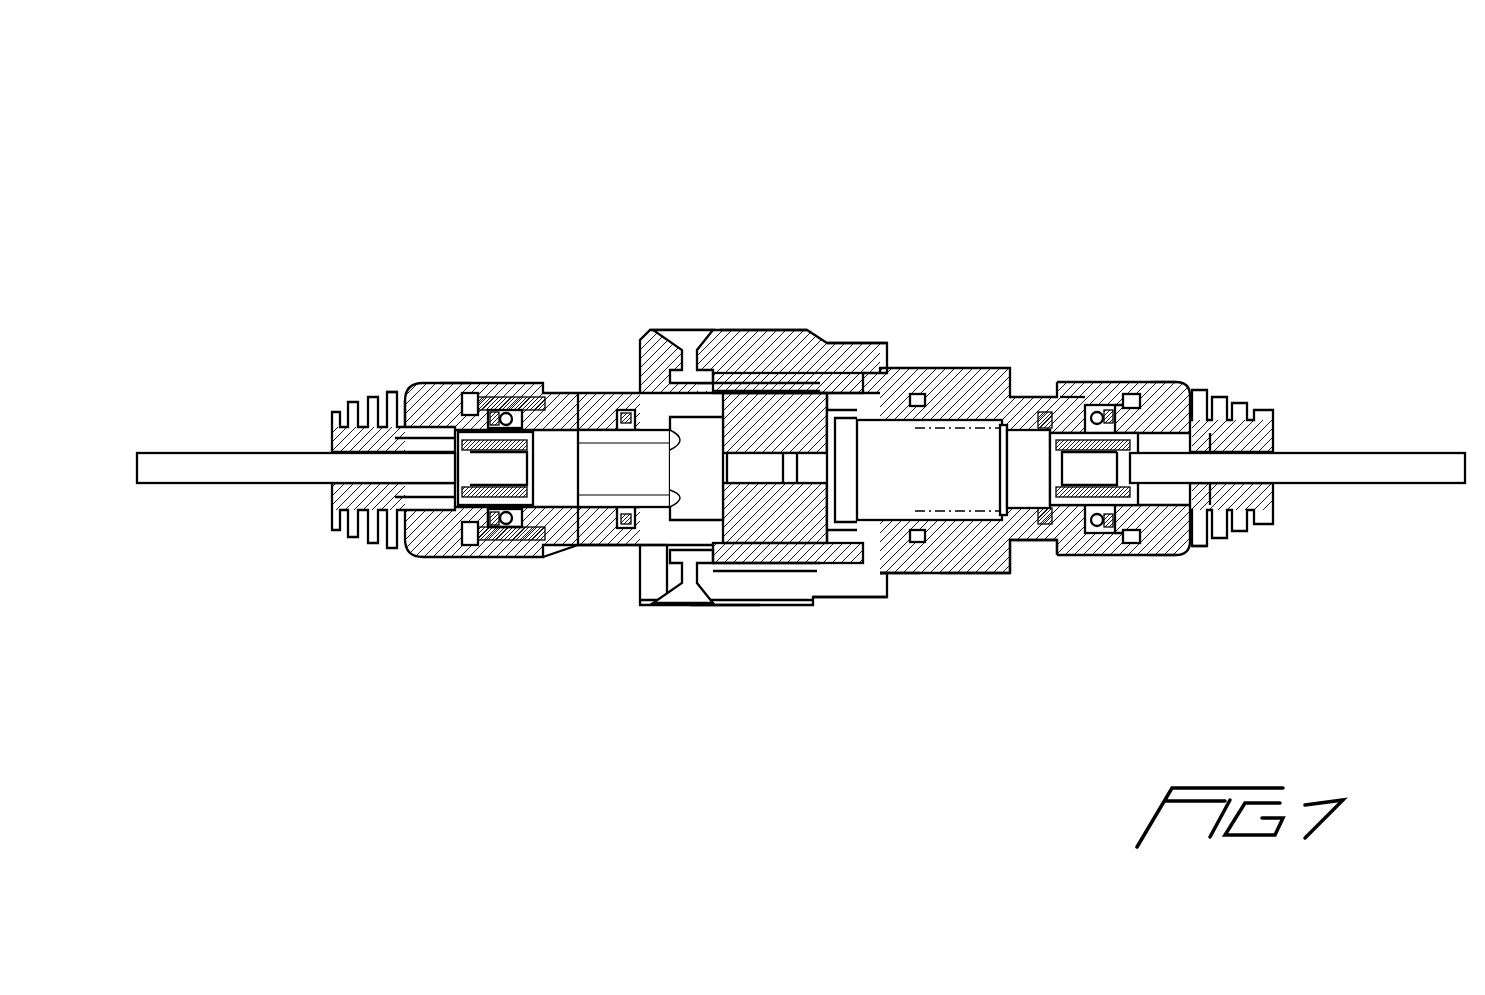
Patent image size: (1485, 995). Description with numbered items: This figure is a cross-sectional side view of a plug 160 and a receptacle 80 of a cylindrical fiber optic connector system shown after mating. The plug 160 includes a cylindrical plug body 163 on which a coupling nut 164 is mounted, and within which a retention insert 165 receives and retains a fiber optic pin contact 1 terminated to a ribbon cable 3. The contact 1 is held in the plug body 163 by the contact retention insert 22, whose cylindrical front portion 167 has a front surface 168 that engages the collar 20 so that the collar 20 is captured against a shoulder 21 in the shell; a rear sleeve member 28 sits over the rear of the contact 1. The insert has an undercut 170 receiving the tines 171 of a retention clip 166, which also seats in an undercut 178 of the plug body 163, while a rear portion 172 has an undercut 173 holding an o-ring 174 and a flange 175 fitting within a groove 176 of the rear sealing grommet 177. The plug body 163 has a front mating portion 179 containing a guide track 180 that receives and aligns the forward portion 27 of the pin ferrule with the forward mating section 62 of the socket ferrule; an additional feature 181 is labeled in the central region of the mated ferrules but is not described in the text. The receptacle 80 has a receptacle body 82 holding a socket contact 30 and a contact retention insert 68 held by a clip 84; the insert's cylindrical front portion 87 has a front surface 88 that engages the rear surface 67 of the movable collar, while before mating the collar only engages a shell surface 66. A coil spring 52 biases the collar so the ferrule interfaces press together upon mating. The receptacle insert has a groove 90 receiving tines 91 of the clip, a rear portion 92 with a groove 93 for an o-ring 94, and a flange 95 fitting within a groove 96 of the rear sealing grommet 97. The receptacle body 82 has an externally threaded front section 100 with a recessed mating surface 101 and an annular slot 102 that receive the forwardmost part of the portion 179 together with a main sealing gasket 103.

The fiber optic pin contact 1 is at (582, 547).
The ribbon cable 3 is at (192, 460).
The collar 20 is at (757, 600).
The shoulder 21 is at (697, 430).
The contact retention insert 22 is at (515, 540).
The forward portion of ferrule 27 is at (677, 430).
The rear sleeve member 28 is at (574, 430).
The socket contact 30 is at (948, 455).
The coil spring 52 is at (933, 430).
The forward mating section of ferrule 62 is at (893, 575).
The shell surface 66 is at (868, 420).
The rear surface of bias collar 67 is at (1020, 540).
The contact retention insert 68 is at (1128, 405).
The receptacle 80 is at (1128, 180).
The receptacle body 82 is at (1003, 573).
The clip 84 is at (1075, 548).
The cylindrical front portion of insert 87 is at (1100, 405).
The front surface of insert 88 is at (993, 430).
The groove 90 is at (1050, 405).
The tines of retention clip 91 is at (1022, 405).
The rear portion of insert 92 is at (1210, 408).
The groove 93 is at (1185, 510).
The o-ring 94 is at (1150, 395).
The flange 95 is at (1170, 533).
The groove of rear sealing grommet 96 is at (1178, 398).
The rear sealing grommet 97 is at (1270, 438).
The externally threaded front section 100 is at (790, 557).
The recessed mating surface 101 is at (888, 575).
The annular slot 102 is at (972, 573).
The main sealing gasket 103 is at (915, 400).
The plug 160 is at (507, 205).
The plug body 163 is at (570, 400).
The coupling nut 164 is at (745, 345).
The retention insert 165 is at (510, 418).
The retention clip 166 is at (643, 553).
The cylindrical front portion of insert 167 is at (605, 547).
The front surface of insert 168 is at (632, 400).
The undercut 170 is at (633, 412).
The tines of retention clip 171 is at (658, 540).
The rear portion of insert 172 is at (512, 405).
The undercut 173 is at (417, 552).
The o-ring 174 is at (497, 530).
The flange 175 is at (427, 415).
The groove of rear sealing grommet 176 is at (418, 405).
The rear sealing grommet 177 is at (400, 418).
The undercut 178 is at (703, 607).
The front mating portion 179 is at (888, 405).
The guide track 180 is at (823, 560).
The center conductor 181 is at (787, 450).